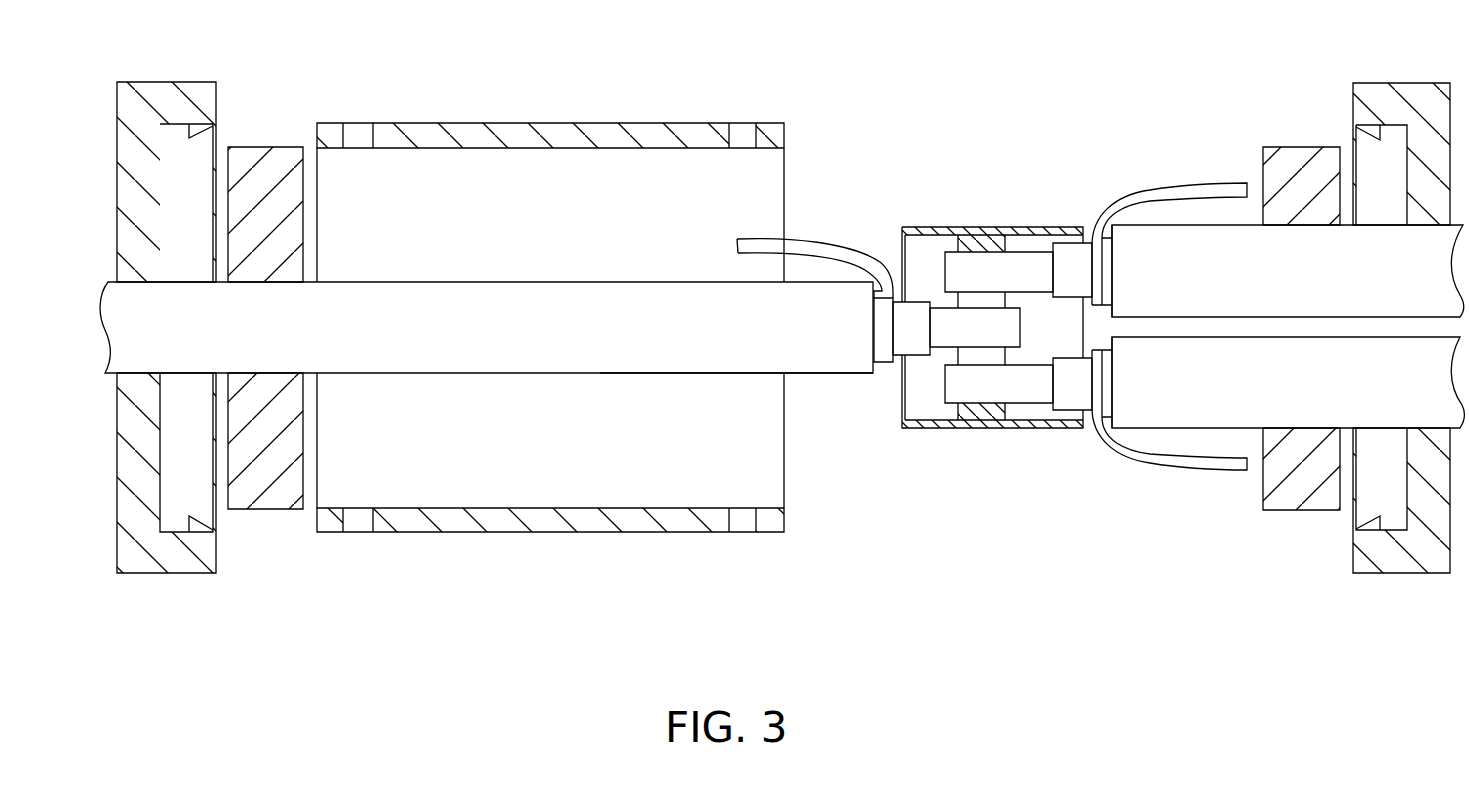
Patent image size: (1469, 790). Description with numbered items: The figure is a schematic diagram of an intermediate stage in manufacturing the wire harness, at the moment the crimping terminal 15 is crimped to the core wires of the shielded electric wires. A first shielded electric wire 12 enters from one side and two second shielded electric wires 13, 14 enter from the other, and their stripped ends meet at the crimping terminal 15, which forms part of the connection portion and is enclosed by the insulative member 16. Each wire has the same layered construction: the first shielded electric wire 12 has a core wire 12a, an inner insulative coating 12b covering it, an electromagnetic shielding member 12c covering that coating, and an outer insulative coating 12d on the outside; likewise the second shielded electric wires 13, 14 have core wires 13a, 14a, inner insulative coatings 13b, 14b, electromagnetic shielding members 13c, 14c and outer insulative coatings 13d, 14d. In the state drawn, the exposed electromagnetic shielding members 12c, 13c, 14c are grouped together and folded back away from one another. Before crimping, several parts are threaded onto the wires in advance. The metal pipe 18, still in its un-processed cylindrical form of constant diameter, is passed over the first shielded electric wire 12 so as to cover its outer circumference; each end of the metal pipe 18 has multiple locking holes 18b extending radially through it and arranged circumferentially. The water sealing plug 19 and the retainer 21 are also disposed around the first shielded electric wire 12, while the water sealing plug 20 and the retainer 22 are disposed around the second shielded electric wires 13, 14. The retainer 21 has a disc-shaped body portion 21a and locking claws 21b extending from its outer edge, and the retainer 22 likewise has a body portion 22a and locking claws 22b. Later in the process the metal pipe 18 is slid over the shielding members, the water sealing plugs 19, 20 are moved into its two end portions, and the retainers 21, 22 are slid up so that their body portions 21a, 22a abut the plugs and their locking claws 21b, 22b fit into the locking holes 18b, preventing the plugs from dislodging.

The first shielded electric wire 12 is at (695, 282).
The core wire 12a is at (1020, 327).
The inner insulative coating 12b is at (902, 346).
The electromagnetic shielding member 12c is at (878, 306).
The outer insulative coating 12d is at (698, 373).
The second shielded electric wire 13 is at (1380, 225).
The core wire 13a is at (977, 283).
The inner insulative coating 13b is at (1095, 290).
The electromagnetic shielding member 13c is at (1108, 258).
The outer insulative coating 13d is at (1248, 225).
The second shielded electric wire 14 is at (1378, 428).
The core wire 14a is at (955, 390).
The inner insulative coating 14b is at (1095, 370).
The electromagnetic shielding member 14c is at (1108, 402).
The outer insulative coating 14d is at (1248, 430).
The crimping terminal 15 is at (970, 428).
The insulative member 16 is at (1012, 428).
The metal pipe 18 is at (525, 138).
The locking hole 18b is at (357, 132).
The water sealing plug 19 is at (277, 147).
The water sealing plug 20 is at (1280, 147).
The retainer 21 is at (167, 305).
The body portion 21a is at (138, 170).
The locking claw 21b is at (190, 130).
The retainer 22 is at (1373, 328).
The body portion 22a is at (1417, 166).
The locking claw 22b is at (1393, 128).